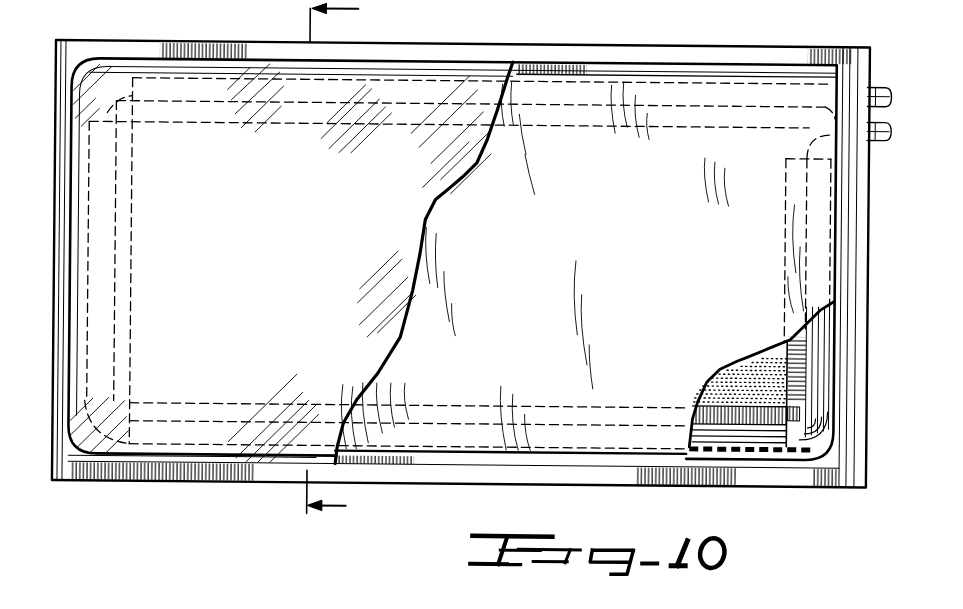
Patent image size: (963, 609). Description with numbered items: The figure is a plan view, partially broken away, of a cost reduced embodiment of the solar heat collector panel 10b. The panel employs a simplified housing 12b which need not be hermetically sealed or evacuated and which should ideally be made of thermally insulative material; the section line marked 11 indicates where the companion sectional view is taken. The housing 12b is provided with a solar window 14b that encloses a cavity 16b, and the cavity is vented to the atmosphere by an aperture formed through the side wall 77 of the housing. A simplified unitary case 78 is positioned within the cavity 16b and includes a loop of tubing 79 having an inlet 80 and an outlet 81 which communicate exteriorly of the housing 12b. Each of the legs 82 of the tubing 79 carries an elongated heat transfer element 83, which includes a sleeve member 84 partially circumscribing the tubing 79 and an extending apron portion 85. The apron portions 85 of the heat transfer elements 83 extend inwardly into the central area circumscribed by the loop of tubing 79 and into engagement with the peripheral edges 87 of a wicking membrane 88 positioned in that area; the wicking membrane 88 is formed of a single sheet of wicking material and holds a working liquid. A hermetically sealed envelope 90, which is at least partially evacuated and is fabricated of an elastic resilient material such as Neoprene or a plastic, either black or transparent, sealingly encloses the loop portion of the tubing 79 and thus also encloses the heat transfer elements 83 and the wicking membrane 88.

The solar heat collector panel 10b is at (590, 13).
The section line 11- 11 is at (309, 262).
The housing 12b is at (167, 477).
The solar window 14b is at (466, 170).
The cavity 16b is at (833, 446).
The side wall 77 is at (67, 413).
The unitary case 78 is at (108, 441).
The loop of tubing 79 is at (826, 418).
The inlet 80 is at (888, 81).
The outlet 81 is at (889, 132).
The legs 82 is at (135, 121).
The heat transfer element 83 is at (132, 231).
The sleeve member 84 is at (823, 326).
The apron portion 85 is at (748, 358).
The peripheral edges 87 is at (816, 433).
The wicking membrane 88 is at (725, 374).
The hermetically sealed envelope 90 is at (840, 311).